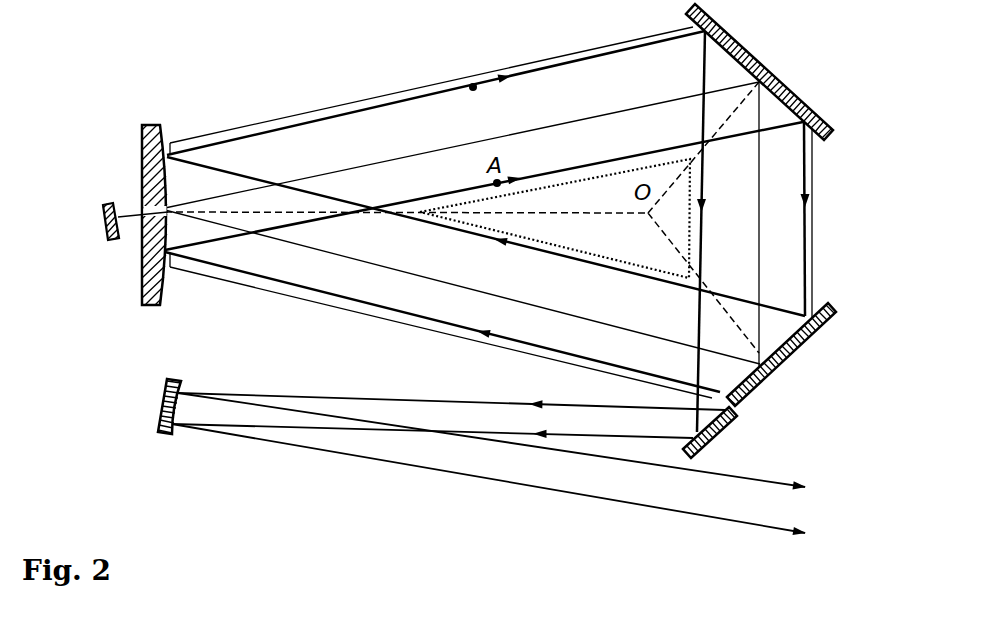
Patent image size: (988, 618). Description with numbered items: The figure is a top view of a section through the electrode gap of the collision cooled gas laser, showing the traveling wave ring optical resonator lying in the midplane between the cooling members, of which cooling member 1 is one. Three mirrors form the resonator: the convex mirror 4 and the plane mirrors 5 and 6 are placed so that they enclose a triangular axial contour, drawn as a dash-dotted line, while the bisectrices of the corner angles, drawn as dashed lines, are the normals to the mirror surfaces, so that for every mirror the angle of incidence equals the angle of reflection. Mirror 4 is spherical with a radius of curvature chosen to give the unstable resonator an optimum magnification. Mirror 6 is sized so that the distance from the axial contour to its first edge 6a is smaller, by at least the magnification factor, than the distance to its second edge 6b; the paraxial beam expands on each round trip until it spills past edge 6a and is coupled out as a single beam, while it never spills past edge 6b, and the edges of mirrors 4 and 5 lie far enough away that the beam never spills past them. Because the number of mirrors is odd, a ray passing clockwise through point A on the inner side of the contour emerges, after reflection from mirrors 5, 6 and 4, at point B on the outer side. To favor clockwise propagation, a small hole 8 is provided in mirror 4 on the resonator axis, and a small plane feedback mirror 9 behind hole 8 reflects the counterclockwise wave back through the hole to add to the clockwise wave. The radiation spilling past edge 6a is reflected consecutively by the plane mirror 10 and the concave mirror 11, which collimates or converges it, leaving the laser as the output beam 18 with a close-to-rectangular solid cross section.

The cooling member 1 is at (577, 83).
The convex mirror 4 is at (143, 243).
The plane mirror 5 is at (797, 93).
The plane mirror 6 is at (790, 357).
The first edge of mirror 6 6a is at (742, 393).
The second edge of mirror 6 6b is at (828, 303).
The hole 8 is at (143, 203).
The feedback mirror 9 is at (110, 207).
The plane mirror 10 is at (710, 437).
The concave mirror 11 is at (160, 423).
The output beam 18 is at (663, 485).